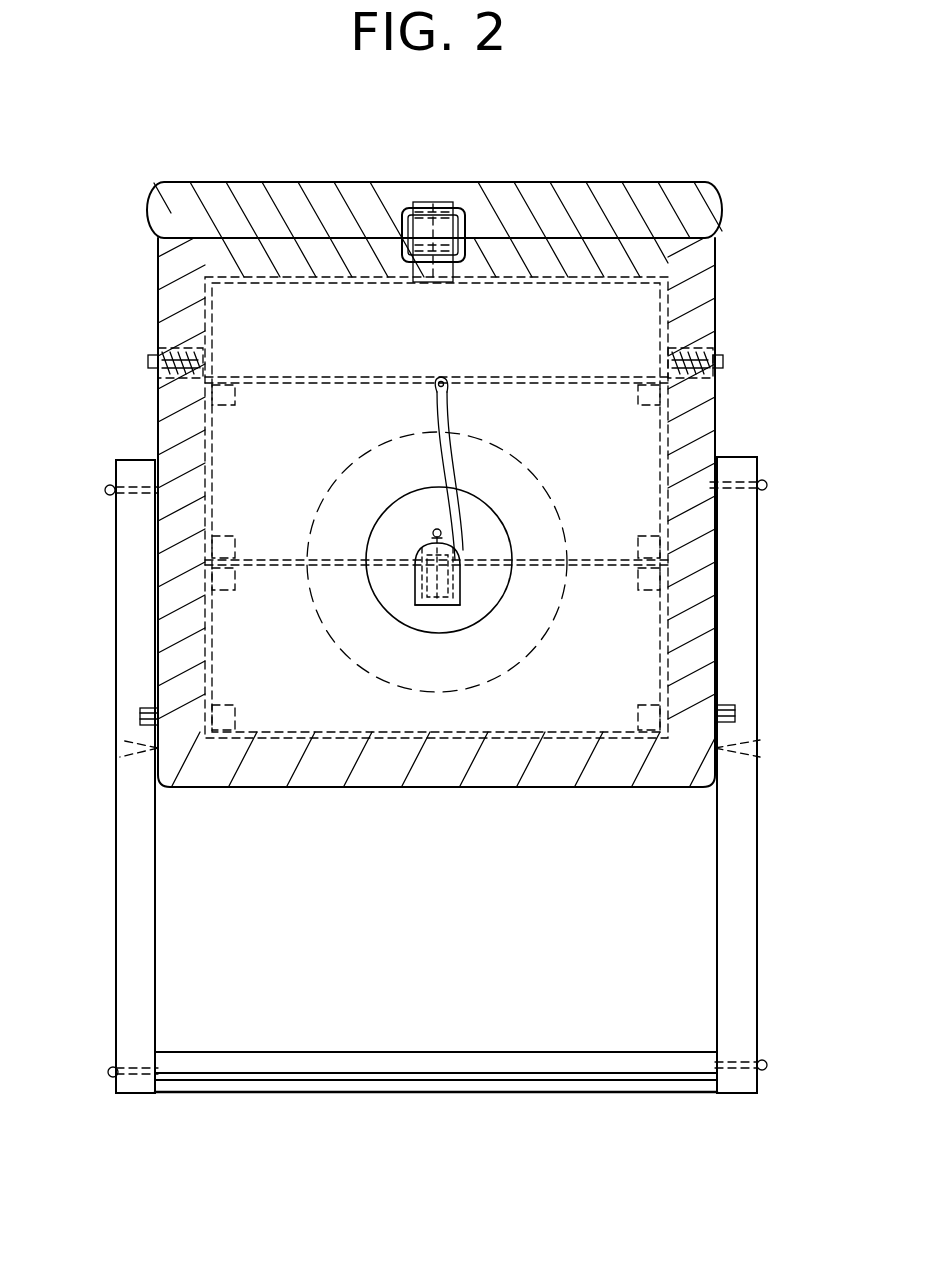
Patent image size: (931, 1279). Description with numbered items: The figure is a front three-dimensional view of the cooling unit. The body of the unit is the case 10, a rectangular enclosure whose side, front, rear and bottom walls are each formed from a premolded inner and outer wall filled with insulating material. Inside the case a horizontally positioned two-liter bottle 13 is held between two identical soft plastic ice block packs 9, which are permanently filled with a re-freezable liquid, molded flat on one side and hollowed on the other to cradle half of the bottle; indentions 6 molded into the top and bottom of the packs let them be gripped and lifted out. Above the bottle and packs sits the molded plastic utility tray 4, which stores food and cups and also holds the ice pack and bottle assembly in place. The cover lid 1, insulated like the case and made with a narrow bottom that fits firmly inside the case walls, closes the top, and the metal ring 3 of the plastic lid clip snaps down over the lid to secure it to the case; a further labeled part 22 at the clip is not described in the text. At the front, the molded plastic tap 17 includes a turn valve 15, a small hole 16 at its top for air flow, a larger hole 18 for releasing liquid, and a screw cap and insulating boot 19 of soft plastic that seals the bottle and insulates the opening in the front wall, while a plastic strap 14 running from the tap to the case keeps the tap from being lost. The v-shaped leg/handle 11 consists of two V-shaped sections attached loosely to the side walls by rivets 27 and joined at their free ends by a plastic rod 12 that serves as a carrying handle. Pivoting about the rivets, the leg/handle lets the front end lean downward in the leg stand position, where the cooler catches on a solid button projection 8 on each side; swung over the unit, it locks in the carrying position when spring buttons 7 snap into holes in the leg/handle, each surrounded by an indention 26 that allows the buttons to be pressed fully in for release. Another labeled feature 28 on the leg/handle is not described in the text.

The cover lid 1 is at (620, 245).
The metal ring 3 is at (410, 212).
The utility tray 4 is at (262, 322).
The indentions 6 is at (228, 430).
The spring buttons 7 is at (160, 372).
The solid button projection 8 is at (140, 715).
The ice block packs 9 is at (650, 437).
The case 10 is at (695, 320).
The v-shaped leg/handle 11 is at (718, 878).
The rod 12 is at (383, 1080).
The 2 liter bottle 13 is at (525, 470).
The plastic strap 14 is at (452, 415).
The turn valve 15 is at (438, 528).
The small hole 16 is at (422, 548).
The molded plastic tap 17 is at (436, 592).
The larger hole 18 is at (440, 595).
The screw cap and insulating boot 19 is at (487, 550).
The buckle 22 is at (440, 222).
The indention around hole 26 is at (135, 748).
The rivets 27 is at (765, 487).
The pivot 28 is at (740, 748).